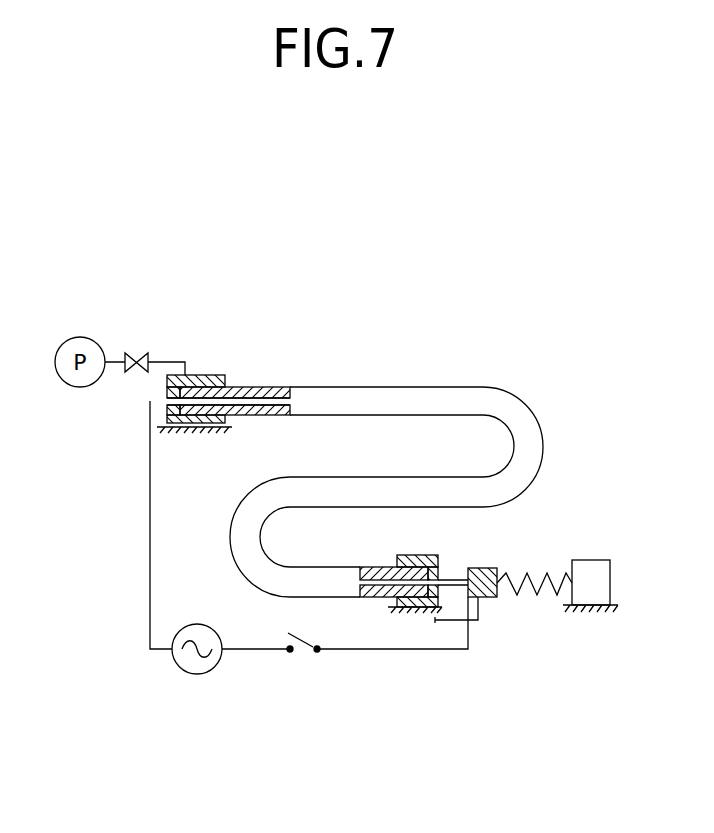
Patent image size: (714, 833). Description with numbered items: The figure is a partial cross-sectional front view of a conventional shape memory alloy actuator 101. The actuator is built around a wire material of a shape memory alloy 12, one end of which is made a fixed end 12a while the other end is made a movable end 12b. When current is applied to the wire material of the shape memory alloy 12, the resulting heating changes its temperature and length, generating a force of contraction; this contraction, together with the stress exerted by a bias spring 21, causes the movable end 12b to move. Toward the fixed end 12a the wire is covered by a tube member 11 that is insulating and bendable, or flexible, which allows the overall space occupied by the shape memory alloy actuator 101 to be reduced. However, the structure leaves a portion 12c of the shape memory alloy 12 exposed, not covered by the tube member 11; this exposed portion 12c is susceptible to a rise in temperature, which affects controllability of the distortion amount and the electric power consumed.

The shape memory alloy actuator 101 is at (470, 313).
The fixed end 12a is at (188, 378).
The wire material of shape memory alloy 12 is at (252, 388).
The tube member 11 is at (264, 419).
The movable end 12b is at (483, 598).
The exposed portion 12c is at (458, 621).
The bias spring 21 is at (533, 596).